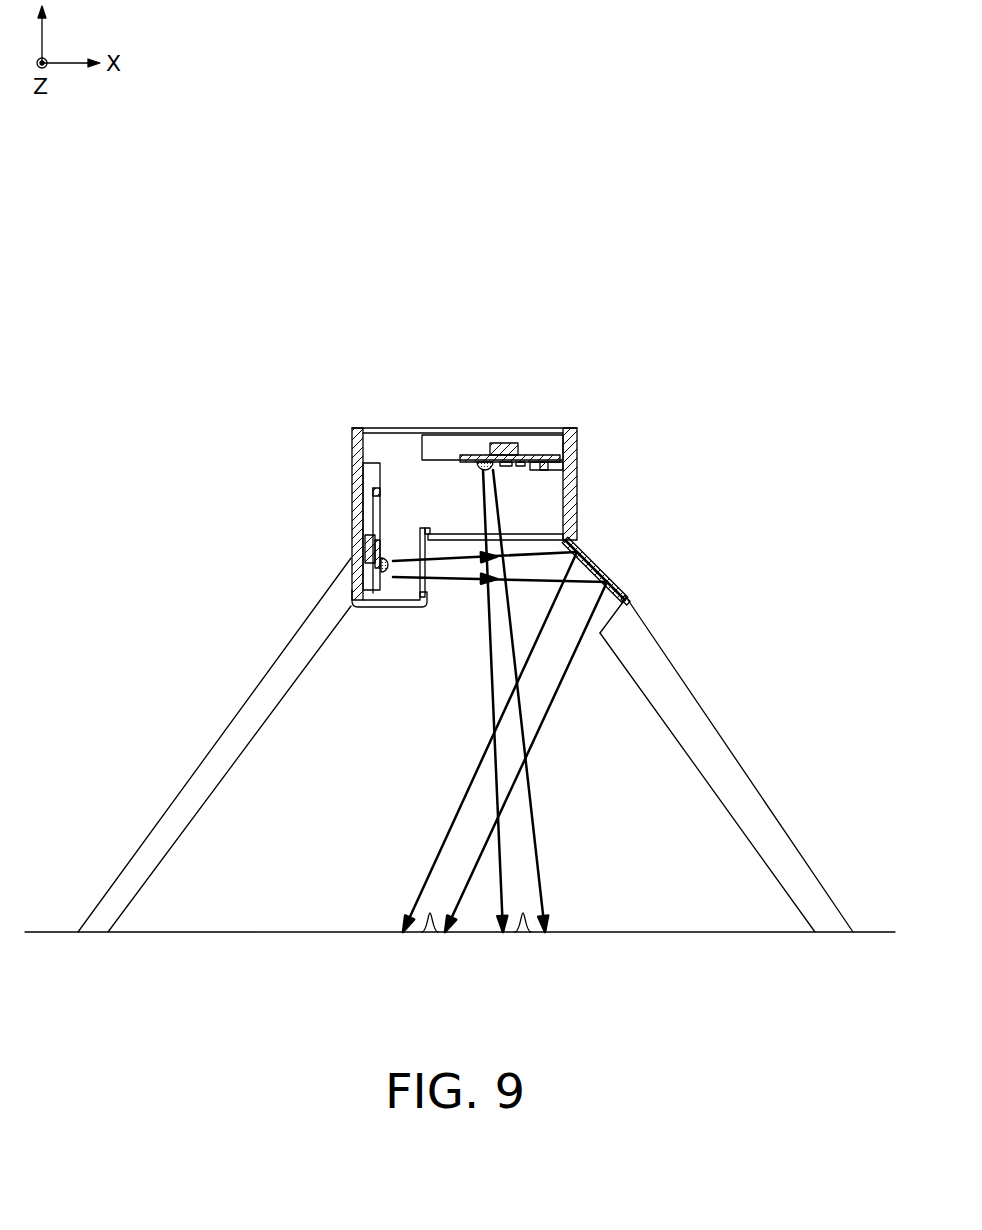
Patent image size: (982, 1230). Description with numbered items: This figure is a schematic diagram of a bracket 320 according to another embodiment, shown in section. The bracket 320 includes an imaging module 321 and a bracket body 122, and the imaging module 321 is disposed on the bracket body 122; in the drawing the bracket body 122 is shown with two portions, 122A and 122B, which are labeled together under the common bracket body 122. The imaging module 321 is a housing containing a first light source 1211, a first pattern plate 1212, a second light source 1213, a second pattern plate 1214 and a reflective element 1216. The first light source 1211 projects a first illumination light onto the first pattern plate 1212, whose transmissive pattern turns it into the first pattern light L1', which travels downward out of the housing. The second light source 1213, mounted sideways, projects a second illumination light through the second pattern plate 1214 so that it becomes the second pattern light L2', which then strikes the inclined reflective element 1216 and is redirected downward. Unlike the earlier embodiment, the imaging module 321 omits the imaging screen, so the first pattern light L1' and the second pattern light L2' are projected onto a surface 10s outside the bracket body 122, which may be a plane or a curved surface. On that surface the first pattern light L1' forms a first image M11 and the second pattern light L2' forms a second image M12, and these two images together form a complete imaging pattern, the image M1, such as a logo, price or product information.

The bracket 320 is at (667, 283).
The imaging module 321 is at (597, 452).
The first light source 1211 is at (484, 455).
The first pattern plate 1212 is at (547, 534).
The second light source 1213 is at (383, 563).
The second pattern plate 1214 is at (420, 530).
The reflective element 1216 is at (603, 572).
The bracket body 122 is at (252, 745).
The bottom portion of support 122A is at (402, 608).
The leg portion of support 122B is at (306, 645).
The first pattern light L1' is at (547, 701).
The second pattern light L2' is at (520, 742).
The surface 10s is at (878, 932).
The image M1 is at (483, 978).
The first image M11 is at (517, 959).
The second image M12 is at (436, 932).